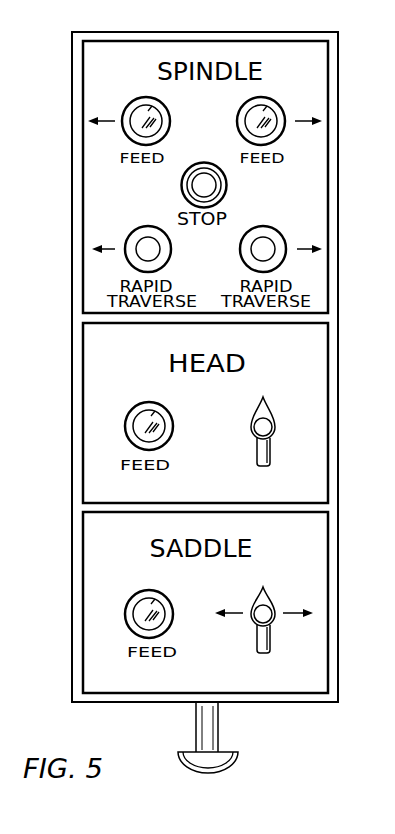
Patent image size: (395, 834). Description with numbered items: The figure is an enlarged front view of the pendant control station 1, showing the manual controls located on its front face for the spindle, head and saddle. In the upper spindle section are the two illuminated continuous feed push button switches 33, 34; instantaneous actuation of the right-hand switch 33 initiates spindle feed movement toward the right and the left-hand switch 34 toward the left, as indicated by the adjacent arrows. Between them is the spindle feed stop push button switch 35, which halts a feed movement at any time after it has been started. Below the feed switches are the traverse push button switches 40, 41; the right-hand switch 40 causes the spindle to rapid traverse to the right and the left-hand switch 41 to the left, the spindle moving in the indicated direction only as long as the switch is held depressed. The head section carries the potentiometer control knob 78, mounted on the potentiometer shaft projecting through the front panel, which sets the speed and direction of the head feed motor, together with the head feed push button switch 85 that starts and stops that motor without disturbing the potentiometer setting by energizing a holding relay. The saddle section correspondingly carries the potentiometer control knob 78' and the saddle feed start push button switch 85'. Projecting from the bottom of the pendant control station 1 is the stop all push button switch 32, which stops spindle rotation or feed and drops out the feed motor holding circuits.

The pendant control station 1 is at (338, 310).
The "stop all" push button switch 32 is at (218, 740).
The right-hand continuous "feed" push button switch 33 is at (238, 120).
The left-hand continuous "feed" push button switch 34 is at (166, 110).
The spindle feed "stop" push button switch 35 is at (227, 193).
The right-hand "traverse" push button switch 40 is at (279, 233).
The left-hand "traverse" push button switch 41 is at (134, 231).
The potentiometer control knob 78 is at (282, 431).
The potentiometer control knob 78' is at (282, 620).
The head "feed" push button switch 85 is at (134, 417).
The saddle feed start push button switch 85' is at (134, 608).